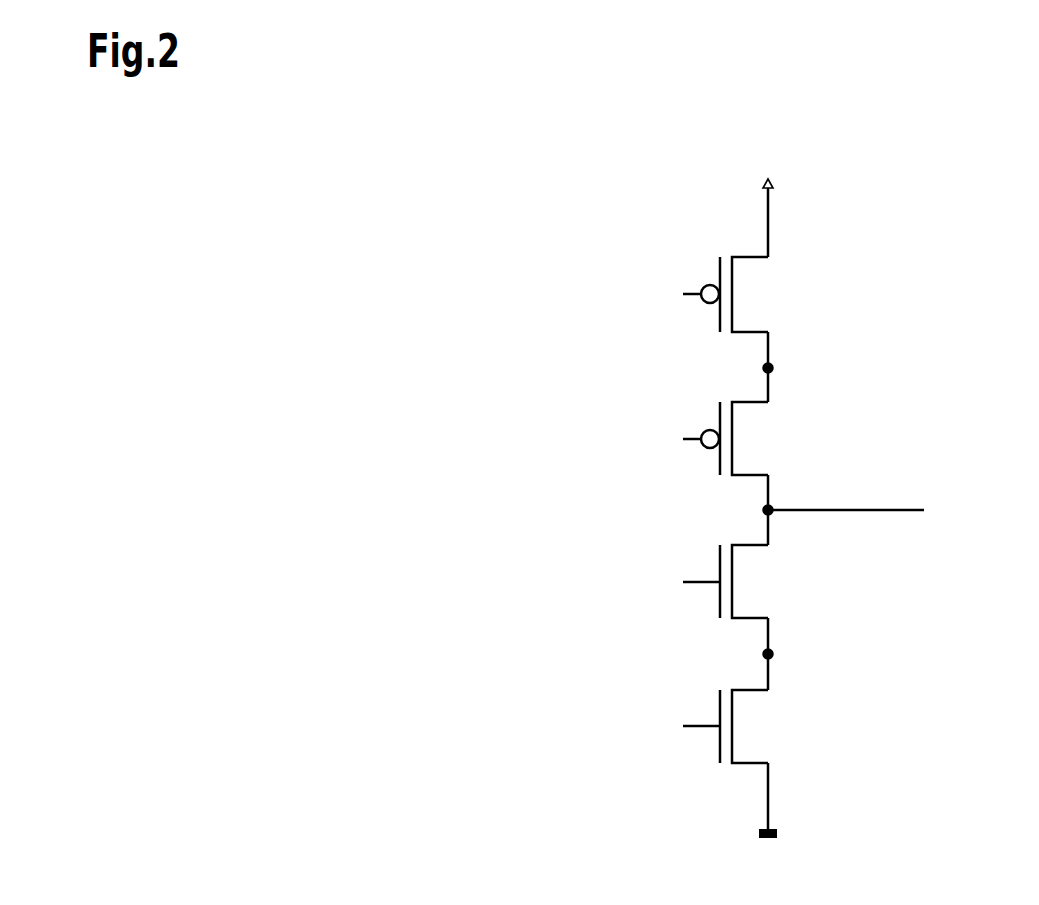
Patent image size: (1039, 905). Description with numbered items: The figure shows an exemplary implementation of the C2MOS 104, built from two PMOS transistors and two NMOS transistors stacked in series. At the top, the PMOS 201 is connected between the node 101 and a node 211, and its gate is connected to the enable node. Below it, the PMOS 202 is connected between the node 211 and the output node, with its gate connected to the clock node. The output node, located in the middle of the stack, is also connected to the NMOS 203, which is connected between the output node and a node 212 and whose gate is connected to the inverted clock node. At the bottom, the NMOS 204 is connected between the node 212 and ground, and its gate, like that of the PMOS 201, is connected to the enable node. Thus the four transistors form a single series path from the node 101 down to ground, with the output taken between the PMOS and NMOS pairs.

The C2MOS 104 is at (470, 420).
The node 101 is at (767, 199).
The PMOS 201 is at (728, 294).
The PMOS 202 is at (728, 438).
The NMOS 203 is at (728, 581).
The NMOS 204 is at (728, 726).
The node 211 is at (787, 367).
The node 212 is at (787, 654).